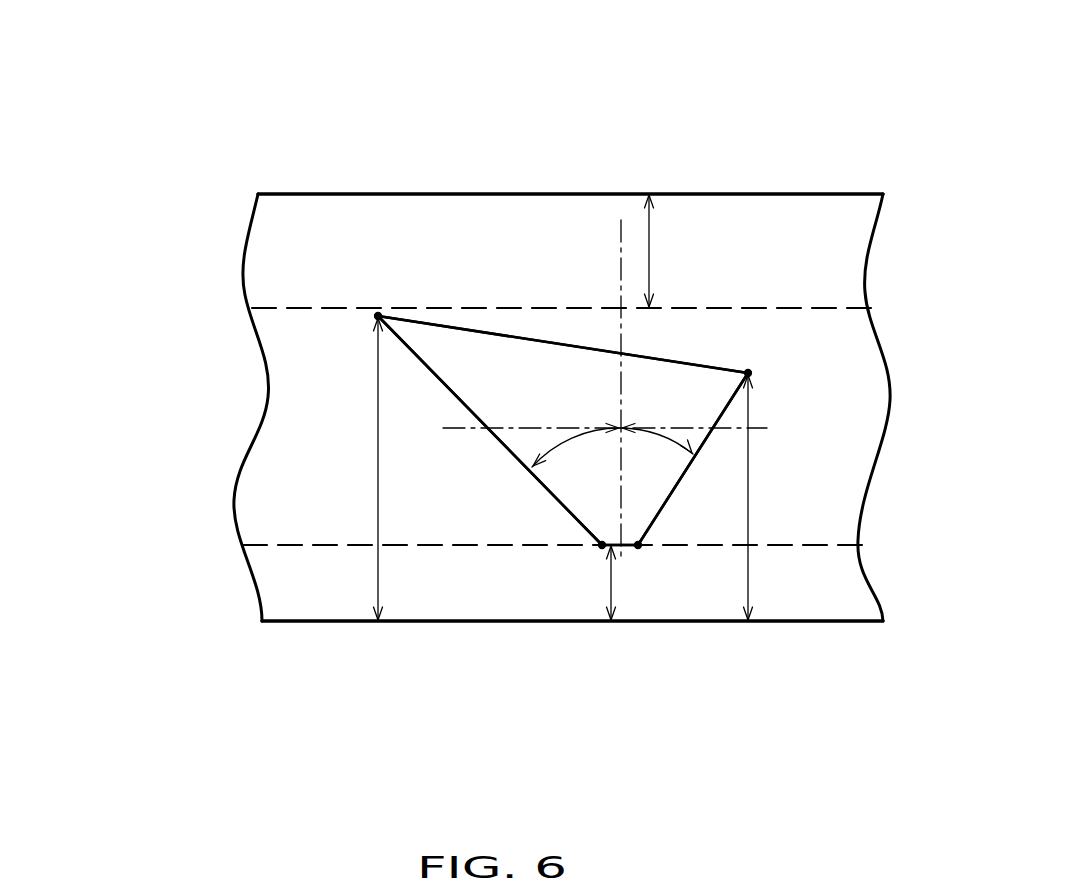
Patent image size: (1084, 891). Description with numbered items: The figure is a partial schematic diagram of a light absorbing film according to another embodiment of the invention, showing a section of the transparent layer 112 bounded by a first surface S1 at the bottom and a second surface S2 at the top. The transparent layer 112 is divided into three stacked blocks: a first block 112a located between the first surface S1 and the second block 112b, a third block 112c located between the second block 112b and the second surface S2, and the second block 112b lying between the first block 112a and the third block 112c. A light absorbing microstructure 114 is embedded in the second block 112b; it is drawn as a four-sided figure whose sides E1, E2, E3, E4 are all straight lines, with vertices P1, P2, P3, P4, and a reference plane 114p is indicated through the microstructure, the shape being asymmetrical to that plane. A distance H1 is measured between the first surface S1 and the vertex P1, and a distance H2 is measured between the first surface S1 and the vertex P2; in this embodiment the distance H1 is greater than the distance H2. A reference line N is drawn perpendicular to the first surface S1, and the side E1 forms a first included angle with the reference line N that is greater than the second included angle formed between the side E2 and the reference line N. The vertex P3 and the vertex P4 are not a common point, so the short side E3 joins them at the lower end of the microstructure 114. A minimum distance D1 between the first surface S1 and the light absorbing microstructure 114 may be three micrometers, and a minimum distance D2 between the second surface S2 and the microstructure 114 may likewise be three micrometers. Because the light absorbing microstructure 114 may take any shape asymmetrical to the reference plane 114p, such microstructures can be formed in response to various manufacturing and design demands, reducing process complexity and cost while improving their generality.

The transparent layer 112 is at (115, 587).
The first block 112a is at (213, 547).
The second block 112b is at (213, 543).
The third block 112c is at (213, 196).
The light absorbing microstructure 114 is at (510, 373).
The reference plane 114p is at (462, 428).
The reference line N is at (620, 237).
The first surface S1 is at (400, 625).
The second surface S2 is at (627, 191).
The vertex P1 is at (380, 312).
The vertex P2 is at (748, 371).
The vertex P3 is at (640, 547).
The vertex P4 is at (600, 547).
The side E1 is at (495, 438).
The side E2 is at (712, 433).
The side E3 is at (630, 548).
The side E4 is at (665, 357).
The distance H1 is at (363, 469).
The distance H2 is at (765, 497).
The minimum distance D1 is at (596, 583).
The minimum distance D2 is at (664, 251).